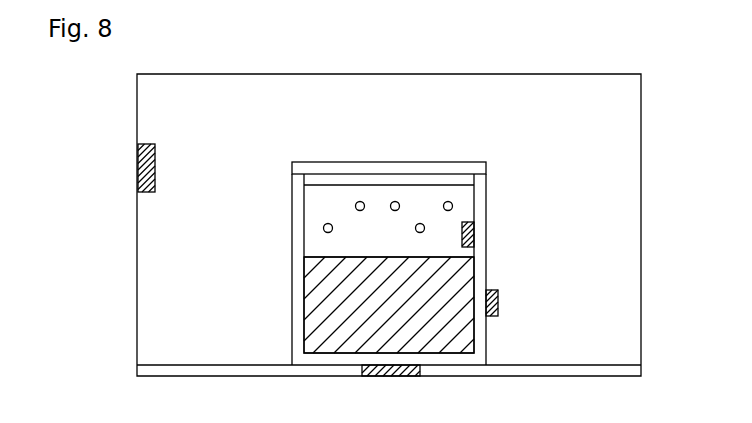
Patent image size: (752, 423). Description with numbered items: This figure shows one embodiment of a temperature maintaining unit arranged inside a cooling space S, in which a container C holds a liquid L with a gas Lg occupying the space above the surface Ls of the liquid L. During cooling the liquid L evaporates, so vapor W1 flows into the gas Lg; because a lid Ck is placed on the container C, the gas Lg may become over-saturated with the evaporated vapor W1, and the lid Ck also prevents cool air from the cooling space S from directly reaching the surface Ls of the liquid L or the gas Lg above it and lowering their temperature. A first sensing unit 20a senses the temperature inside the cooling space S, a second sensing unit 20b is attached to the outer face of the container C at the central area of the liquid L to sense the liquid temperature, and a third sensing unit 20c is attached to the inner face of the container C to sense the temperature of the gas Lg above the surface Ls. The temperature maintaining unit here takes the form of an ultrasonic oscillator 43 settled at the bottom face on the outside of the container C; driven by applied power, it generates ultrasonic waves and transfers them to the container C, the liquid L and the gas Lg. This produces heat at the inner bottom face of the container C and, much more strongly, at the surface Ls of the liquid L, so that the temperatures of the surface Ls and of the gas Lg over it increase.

The first sensing unit 20a is at (138, 166).
The second sensing unit 20b is at (498, 301).
The third sensing unit 20c is at (474, 233).
The ultrasonic oscillator 43 is at (420, 366).
The vapor W1 is at (395, 201).
The lid Ck is at (476, 162).
The container C is at (483, 337).
The surface of the liquid Ls is at (330, 258).
The gas Lg is at (389, 221).
The liquid L is at (324, 327).
The cooling space S is at (389, 225).